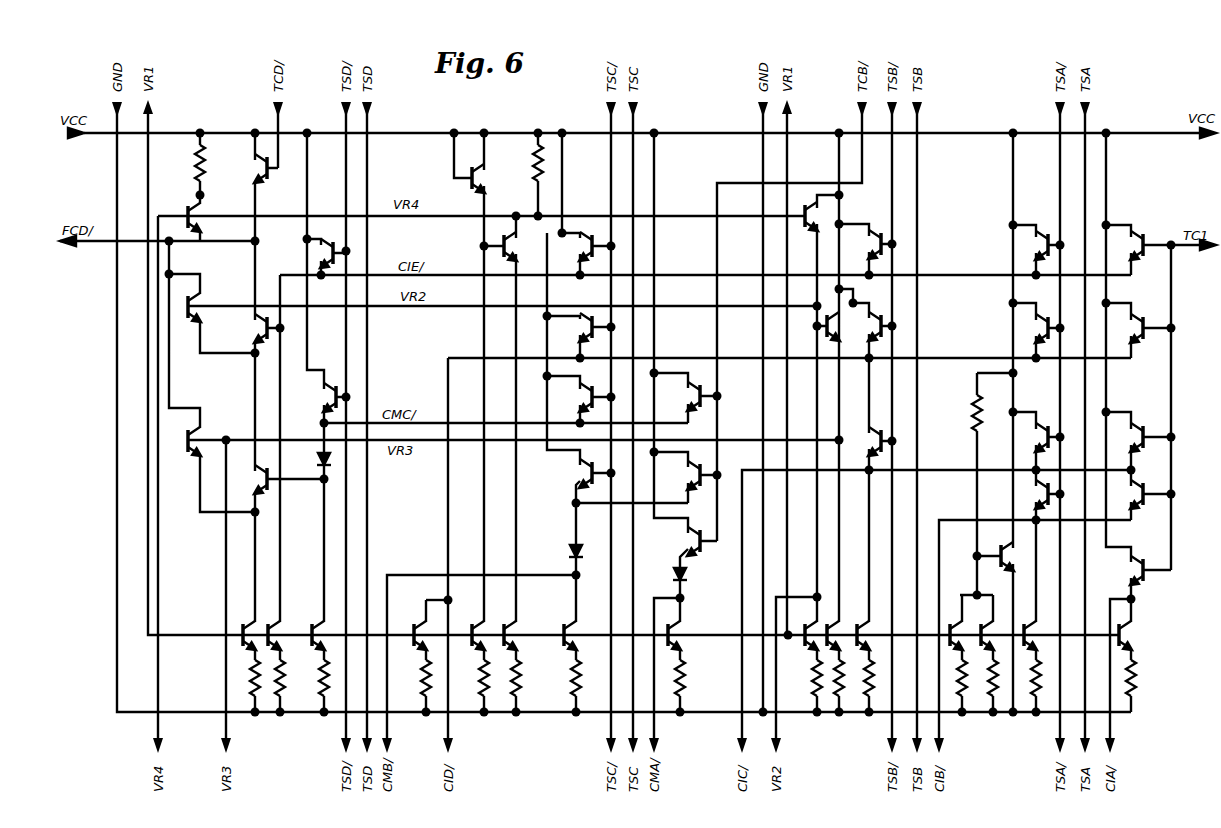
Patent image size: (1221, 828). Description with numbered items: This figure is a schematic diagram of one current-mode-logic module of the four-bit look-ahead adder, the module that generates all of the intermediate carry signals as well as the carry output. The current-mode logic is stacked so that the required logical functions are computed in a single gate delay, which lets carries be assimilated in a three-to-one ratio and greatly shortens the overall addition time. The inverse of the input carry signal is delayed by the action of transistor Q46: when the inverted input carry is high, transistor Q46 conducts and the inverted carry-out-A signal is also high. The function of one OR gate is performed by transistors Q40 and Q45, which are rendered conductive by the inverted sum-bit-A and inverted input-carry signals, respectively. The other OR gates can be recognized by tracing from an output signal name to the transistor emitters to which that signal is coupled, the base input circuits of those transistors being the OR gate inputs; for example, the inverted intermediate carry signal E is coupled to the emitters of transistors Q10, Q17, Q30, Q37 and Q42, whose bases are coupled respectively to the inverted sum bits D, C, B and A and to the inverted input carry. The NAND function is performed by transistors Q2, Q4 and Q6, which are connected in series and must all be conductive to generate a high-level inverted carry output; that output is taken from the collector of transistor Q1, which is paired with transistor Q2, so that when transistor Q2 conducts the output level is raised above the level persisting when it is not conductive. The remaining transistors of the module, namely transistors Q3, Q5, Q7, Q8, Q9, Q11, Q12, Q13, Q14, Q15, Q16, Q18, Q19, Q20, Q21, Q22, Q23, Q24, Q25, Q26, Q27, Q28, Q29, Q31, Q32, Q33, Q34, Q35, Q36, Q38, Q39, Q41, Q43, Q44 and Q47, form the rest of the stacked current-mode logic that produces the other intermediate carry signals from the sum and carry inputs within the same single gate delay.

The transistor Q1 is at (206, 216).
The transistor Q2 is at (272, 171).
The transistor Q3 is at (206, 306).
The transistor Q4 is at (248, 328).
The transistor Q5 is at (208, 439).
The transistor Q6 is at (249, 479).
The transistor Q7 is at (241, 630).
The transistor Q8 is at (285, 631).
The transistor Q9 is at (330, 634).
The transistor Q10 is at (325, 244).
The transistor Q11 is at (315, 397).
The transistor Q12 is at (409, 630).
The transistor Q13 is at (493, 178).
The transistor Q14 is at (521, 246).
The transistor Q15 is at (470, 630).
The transistor Q16 is at (527, 633).
The transistor Q17 is at (573, 246).
The transistor Q18 is at (571, 327).
The transistor Q19 is at (571, 397).
The transistor Q20 is at (567, 473).
The transistor Q21 is at (586, 634).
The transistor Q22 is at (678, 396).
The transistor Q23 is at (678, 475).
The transistor Q24 is at (678, 541).
The transistor Q25 is at (692, 634).
The transistor Q26 is at (811, 227).
The transistor Q27 is at (832, 310).
The transistor Q28 is at (798, 642).
The transistor Q29 is at (843, 620).
The transistor Q30 is at (880, 229).
The transistor Q31 is at (880, 313).
The transistor Q32 is at (879, 426).
The transistor Q33 is at (873, 624).
The transistor Q34 is at (1019, 556).
The transistor Q35 is at (953, 619).
The transistor Q36 is at (996, 623).
The transistor Q37 is at (1031, 245).
The transistor Q38 is at (1032, 328).
The transistor Q39 is at (1032, 437).
The transistor Q40 is at (1032, 494).
The transistor Q41 is at (1042, 624).
The transistor Q42 is at (1126, 245).
The transistor Q43 is at (1127, 328).
The transistor Q44 is at (1127, 437).
The transistor Q45 is at (1127, 494).
The transistor Q46 is at (1124, 570).
The transistor Q47 is at (1144, 635).